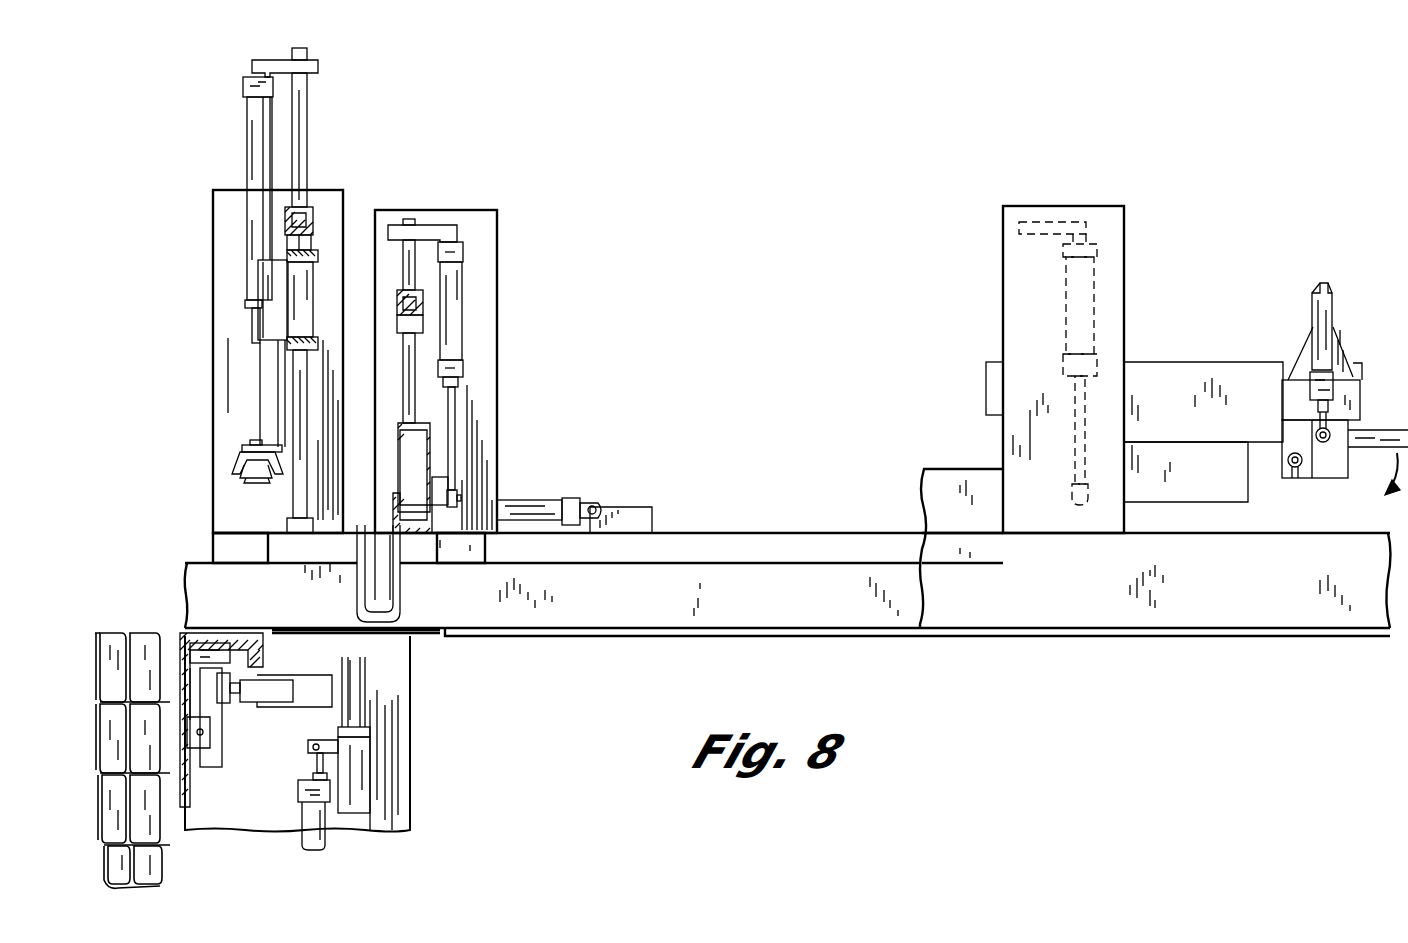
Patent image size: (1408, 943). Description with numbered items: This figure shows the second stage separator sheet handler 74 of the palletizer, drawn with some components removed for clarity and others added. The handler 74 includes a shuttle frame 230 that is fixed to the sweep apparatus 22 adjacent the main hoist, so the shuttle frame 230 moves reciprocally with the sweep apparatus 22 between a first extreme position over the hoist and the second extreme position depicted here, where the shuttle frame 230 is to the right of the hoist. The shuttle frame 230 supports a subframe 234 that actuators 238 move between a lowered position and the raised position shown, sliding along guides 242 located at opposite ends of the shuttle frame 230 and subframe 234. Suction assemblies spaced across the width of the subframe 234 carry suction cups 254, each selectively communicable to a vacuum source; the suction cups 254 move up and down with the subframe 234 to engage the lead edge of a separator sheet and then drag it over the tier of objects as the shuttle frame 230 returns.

The sweep apparatus 22 is at (1019, 176).
The second stage separator sheet handler 74 is at (344, 62).
The shuttle frame 230 is at (218, 205).
The subframe 234 is at (278, 378).
The actuators 238 is at (250, 110).
The guides 242 is at (300, 120).
The suction cups 254 is at (255, 481).